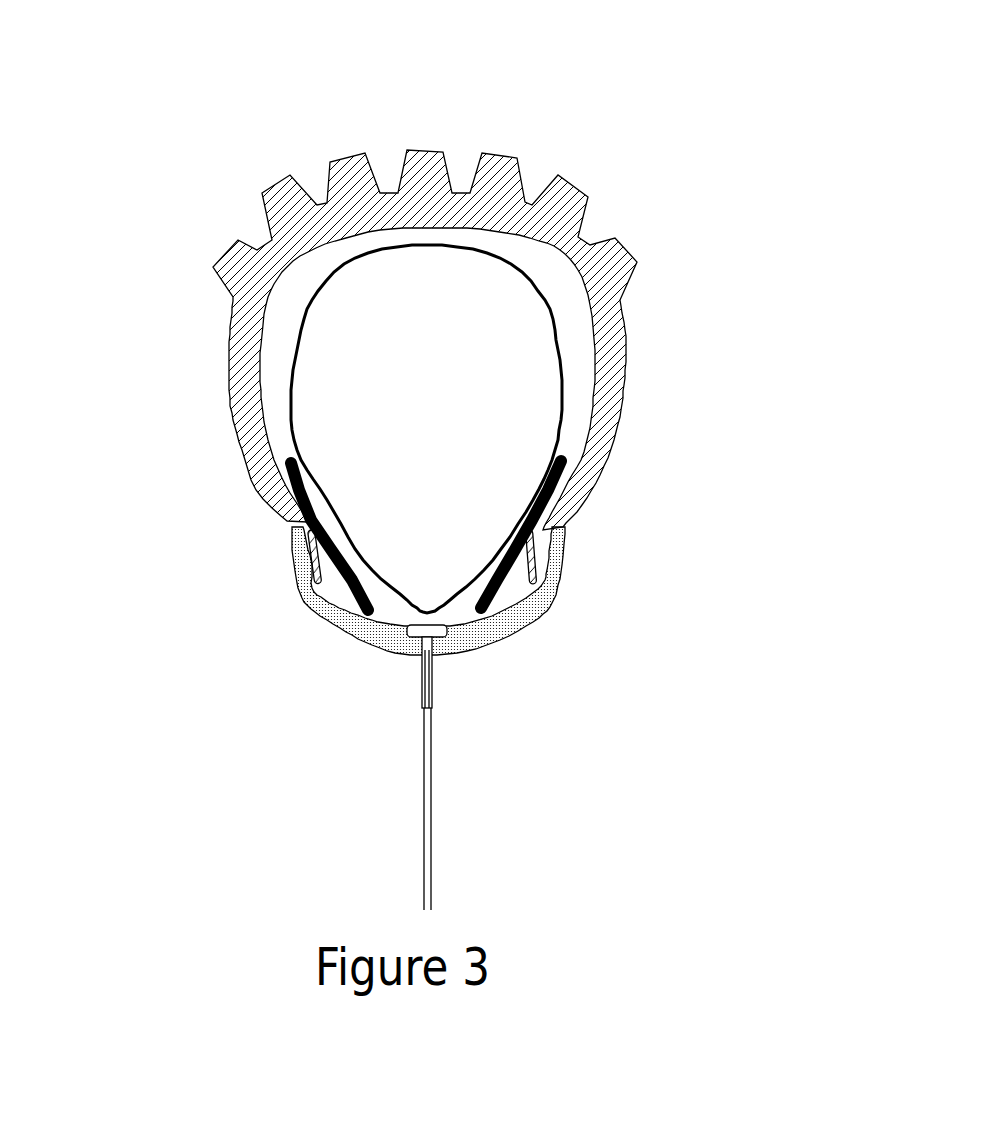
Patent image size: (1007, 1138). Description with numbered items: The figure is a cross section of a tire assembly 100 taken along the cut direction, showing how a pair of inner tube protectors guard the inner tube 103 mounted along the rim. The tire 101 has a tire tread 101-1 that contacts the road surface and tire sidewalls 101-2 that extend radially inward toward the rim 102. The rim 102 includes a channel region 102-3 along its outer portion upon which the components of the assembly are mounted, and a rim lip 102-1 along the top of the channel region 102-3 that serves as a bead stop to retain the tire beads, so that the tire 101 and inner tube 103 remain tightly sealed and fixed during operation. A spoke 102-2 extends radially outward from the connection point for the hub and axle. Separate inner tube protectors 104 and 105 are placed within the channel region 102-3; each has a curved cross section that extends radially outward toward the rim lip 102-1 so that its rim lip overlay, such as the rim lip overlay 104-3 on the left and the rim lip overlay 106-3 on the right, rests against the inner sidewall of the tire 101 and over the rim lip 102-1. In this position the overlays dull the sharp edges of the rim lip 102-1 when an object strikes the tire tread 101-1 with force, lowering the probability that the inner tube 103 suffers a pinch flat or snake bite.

The tire assembly 100 is at (312, 120).
The tire 101 is at (228, 408).
The tire tread 101-1 is at (638, 119).
The tire sidewalls 101-2 is at (855, 518).
The rim 102 is at (572, 717).
The rim lip 102-1 is at (703, 628).
The spoke 102-2 is at (568, 806).
The channel region 102-3 is at (377, 642).
The inner tube 103 is at (518, 300).
The inner tube protector 104 is at (330, 560).
The rim lip overlay 104-3 is at (395, 475).
The inner tube protector 105 is at (527, 560).
The rim lip overlay 106-3 is at (548, 483).